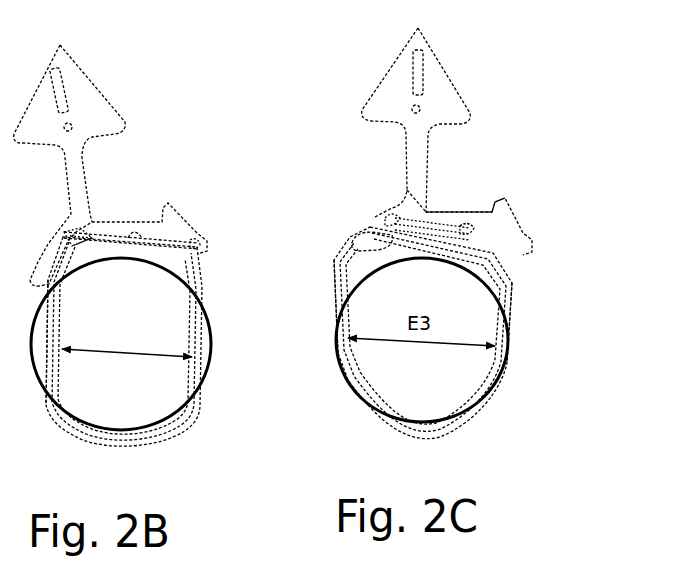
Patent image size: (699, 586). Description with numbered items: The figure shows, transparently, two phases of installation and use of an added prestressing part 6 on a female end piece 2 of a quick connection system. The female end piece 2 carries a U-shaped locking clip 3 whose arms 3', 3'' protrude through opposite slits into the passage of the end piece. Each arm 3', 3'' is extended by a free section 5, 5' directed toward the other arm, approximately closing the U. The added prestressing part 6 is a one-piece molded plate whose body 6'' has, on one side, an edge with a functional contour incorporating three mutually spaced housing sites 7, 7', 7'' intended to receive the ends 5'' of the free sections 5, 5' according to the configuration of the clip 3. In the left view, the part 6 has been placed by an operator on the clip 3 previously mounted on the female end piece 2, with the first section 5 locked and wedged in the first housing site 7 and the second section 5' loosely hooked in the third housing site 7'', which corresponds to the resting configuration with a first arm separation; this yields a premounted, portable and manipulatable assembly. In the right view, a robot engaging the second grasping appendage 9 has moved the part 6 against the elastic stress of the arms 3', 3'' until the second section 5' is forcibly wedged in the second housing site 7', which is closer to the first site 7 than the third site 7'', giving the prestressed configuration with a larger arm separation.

In FIG. 2B, the female end piece 2 is at (120, 278).
In FIG. 2B, the U-shaped locking clip 3 is at (130, 371).
In FIG. 2C, the U-shaped locking clip 3 is at (423, 367).
In FIG. 2B, the arm of the U 3' is at (24, 342).
In FIG. 2C, the arm of the U 3' is at (540, 323).
In FIG. 2C, the arm of the U 3'' is at (304, 328).
In FIG. 2C, the first section 5 is at (501, 221).
In FIG. 2C, the second section 5' is at (352, 214).
In FIG. 2B, the end of the free section 5'' is at (108, 208).
In FIG. 2B, the added prestressing part 6 is at (110, 165).
In FIG. 2C, the added prestressing part 6 is at (447, 141).
In FIG. 2C, the body of the plate 6'' is at (451, 176).
In FIG. 2B, the first housing site 7 is at (91, 208).
In FIG. 2C, the first housing site 7 is at (421, 196).
In FIG. 2C, the second housing site 7' is at (493, 193).
In FIG. 2B, the third housing site 7'' is at (215, 209).
In FIG. 2C, the second grasping appendage 9 is at (505, 208).